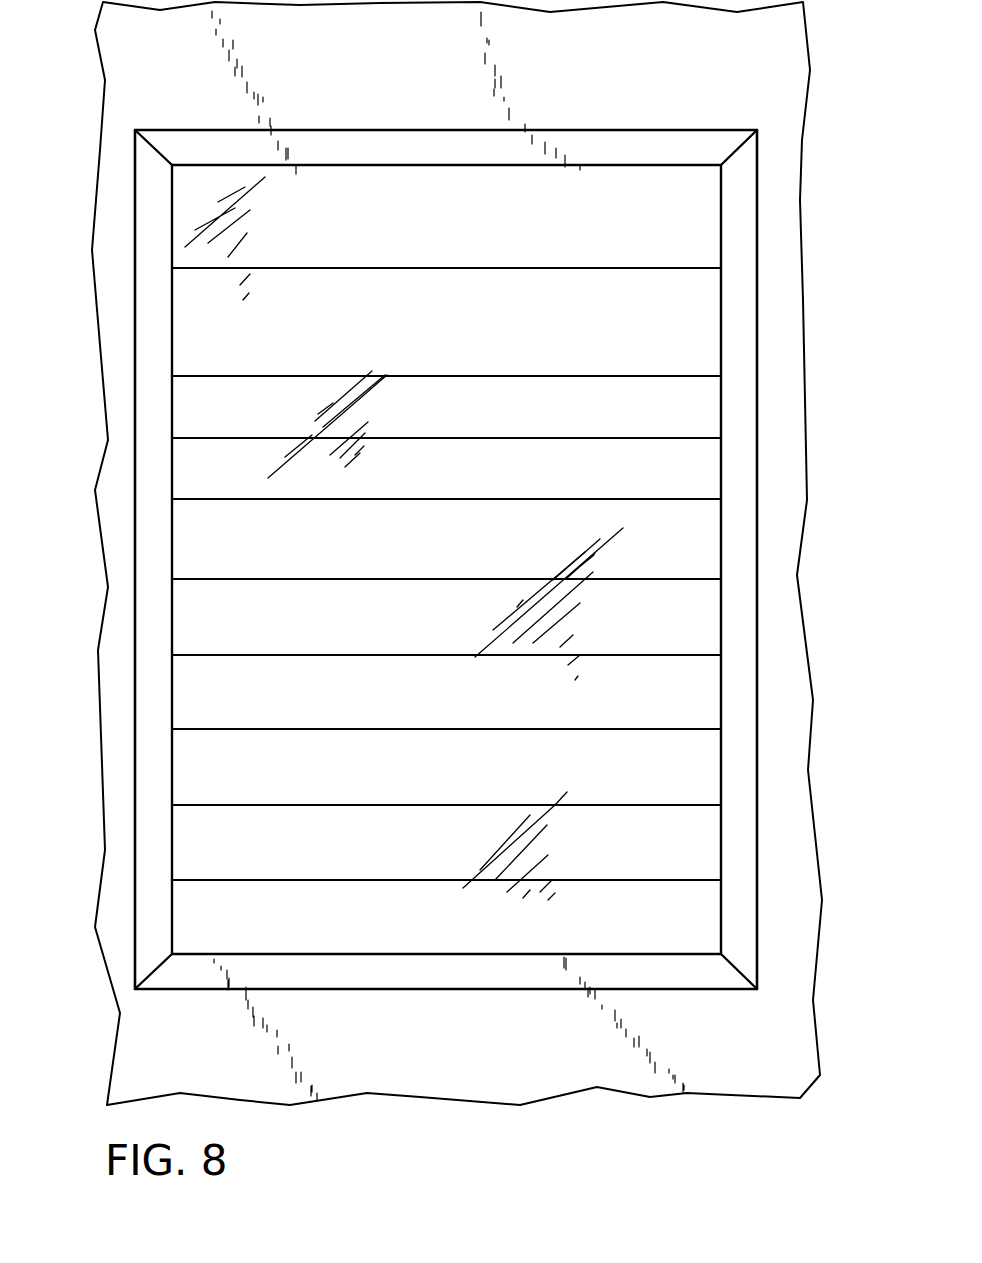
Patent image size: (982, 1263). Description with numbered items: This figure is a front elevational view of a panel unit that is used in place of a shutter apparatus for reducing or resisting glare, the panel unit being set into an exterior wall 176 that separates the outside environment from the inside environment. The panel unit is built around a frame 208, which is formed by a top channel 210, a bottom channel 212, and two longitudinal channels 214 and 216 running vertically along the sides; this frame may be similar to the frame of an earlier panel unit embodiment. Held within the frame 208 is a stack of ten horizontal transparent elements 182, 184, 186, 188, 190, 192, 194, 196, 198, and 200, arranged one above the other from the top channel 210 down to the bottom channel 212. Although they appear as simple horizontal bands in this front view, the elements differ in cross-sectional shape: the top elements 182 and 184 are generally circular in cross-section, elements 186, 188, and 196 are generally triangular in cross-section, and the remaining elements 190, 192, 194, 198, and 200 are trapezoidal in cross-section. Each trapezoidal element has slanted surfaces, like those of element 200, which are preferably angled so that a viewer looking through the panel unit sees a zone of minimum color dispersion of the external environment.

The exterior wall 176 is at (385, 66).
The transparent element 182 is at (418, 233).
The transparent element 184 is at (420, 333).
The transparent element 186 is at (424, 419).
The transparent element 188 is at (428, 485).
The transparent element 190 is at (428, 553).
The transparent element 192 is at (428, 634).
The transparent element 194 is at (433, 702).
The transparent element 196 is at (436, 782).
The transparent element 198 is at (433, 854).
The transparent element 200 is at (428, 927).
The frame 208 is at (563, 110).
The top channel 210 is at (663, 128).
The bottom channel 212 is at (450, 982).
The longitudinal channel 214 is at (740, 587).
The longitudinal channel 216 is at (148, 563).